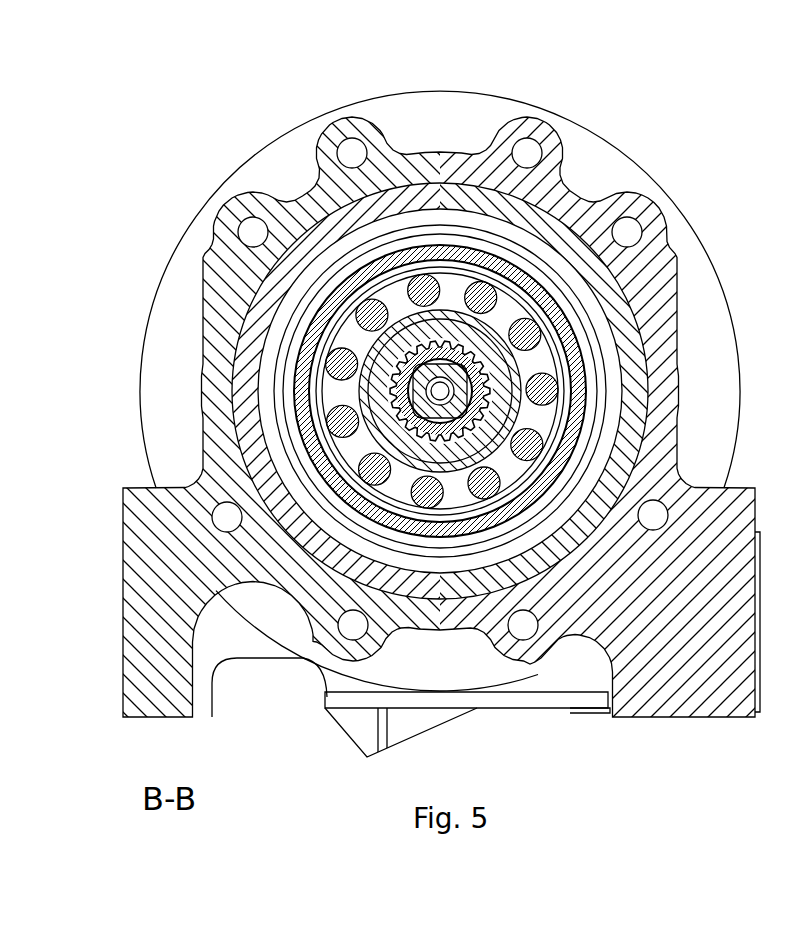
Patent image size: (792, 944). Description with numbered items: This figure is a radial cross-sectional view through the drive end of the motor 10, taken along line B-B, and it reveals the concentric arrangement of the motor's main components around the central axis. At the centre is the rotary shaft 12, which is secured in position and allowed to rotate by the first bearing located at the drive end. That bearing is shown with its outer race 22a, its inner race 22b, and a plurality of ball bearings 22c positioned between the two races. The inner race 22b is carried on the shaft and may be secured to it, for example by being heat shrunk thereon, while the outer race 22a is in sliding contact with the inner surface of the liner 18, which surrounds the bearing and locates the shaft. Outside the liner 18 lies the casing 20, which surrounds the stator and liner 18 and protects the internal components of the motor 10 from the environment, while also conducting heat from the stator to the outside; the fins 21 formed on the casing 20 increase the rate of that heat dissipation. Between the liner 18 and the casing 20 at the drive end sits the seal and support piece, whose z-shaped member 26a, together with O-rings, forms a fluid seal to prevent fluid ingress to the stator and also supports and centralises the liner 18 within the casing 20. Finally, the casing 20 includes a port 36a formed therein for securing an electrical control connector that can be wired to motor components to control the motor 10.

The motor 10 is at (658, 101).
The rotary shaft 12 is at (403, 342).
The liner 18 is at (583, 393).
The casing 20 is at (540, 185).
The fins 21 is at (473, 112).
The outer race 22a is at (553, 438).
The inner race 22b is at (363, 392).
The ball bearings 22c is at (523, 458).
The z-shaped member 26a is at (587, 345).
The port 36a is at (402, 730).